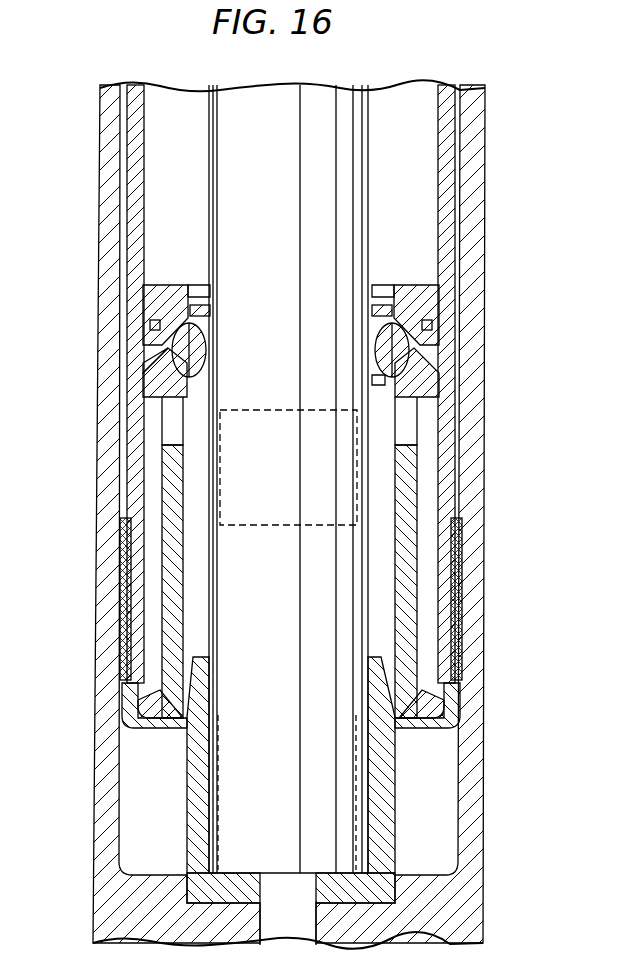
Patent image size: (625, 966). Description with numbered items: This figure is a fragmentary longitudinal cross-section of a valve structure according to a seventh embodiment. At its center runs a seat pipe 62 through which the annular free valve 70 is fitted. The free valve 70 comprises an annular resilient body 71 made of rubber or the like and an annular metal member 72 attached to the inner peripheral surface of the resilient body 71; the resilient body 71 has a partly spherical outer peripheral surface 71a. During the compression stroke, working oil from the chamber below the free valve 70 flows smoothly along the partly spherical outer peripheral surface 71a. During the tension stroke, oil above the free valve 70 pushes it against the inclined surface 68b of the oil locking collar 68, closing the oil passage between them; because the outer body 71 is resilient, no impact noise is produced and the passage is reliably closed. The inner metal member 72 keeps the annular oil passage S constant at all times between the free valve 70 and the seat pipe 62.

The tube 62 is at (217, 171).
The annular resilient body 71 is at (178, 338).
The partly spherical outer peripheral surface 71a is at (178, 350).
The annular metal member 72 is at (207, 358).
The free valve 70 is at (412, 338).
The inclined surface 68b is at (425, 351).
The annular oil passage S is at (374, 376).
The oil locking collar 68 is at (411, 607).